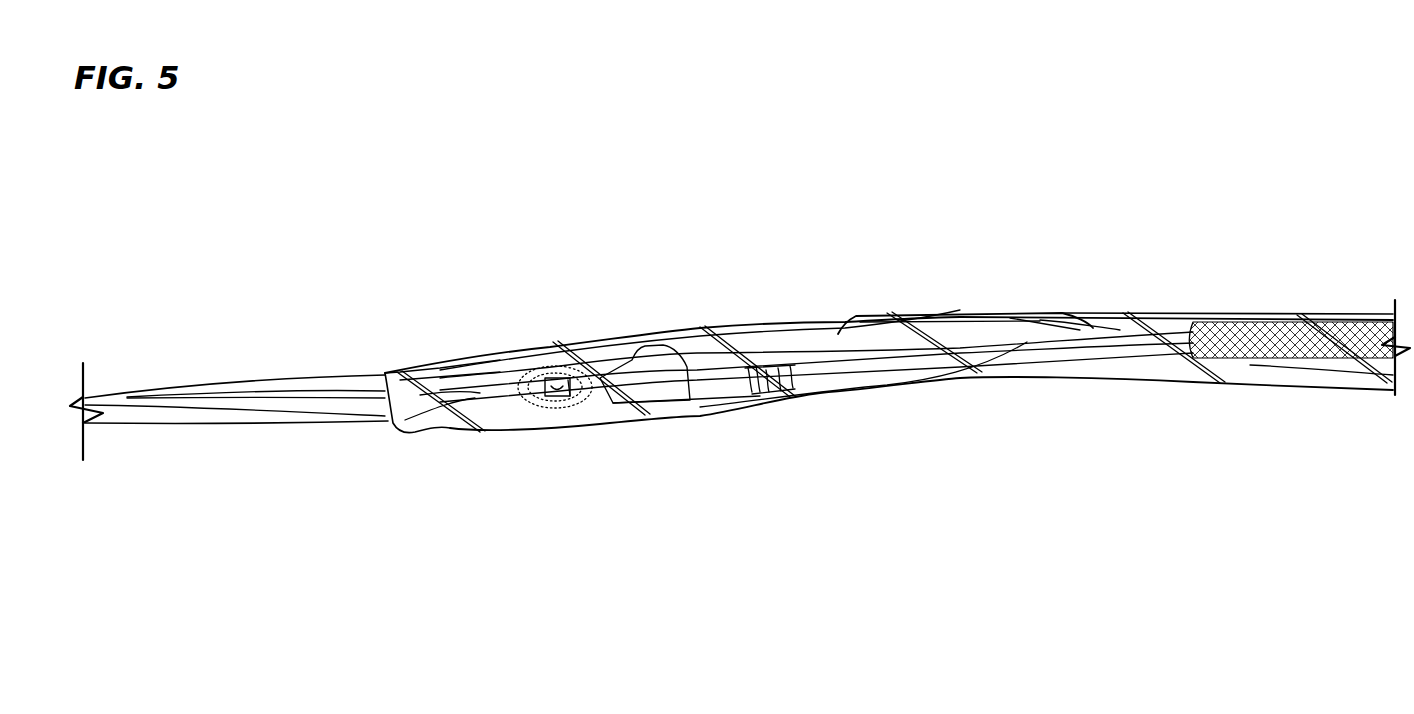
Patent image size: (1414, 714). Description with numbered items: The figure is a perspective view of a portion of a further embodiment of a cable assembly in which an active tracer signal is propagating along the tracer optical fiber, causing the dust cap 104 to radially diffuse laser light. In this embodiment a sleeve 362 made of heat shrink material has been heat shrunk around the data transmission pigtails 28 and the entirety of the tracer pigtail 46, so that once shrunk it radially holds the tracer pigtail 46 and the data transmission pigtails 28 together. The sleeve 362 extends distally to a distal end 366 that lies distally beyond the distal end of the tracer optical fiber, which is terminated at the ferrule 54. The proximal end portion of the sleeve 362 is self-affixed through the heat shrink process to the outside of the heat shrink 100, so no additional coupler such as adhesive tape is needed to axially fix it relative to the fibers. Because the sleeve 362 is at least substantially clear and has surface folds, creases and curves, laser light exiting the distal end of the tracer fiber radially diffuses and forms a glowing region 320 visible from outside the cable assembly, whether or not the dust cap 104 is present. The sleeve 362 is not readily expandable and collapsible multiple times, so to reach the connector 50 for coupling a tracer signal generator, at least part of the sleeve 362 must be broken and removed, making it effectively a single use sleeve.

The data transmission pigtails 28 is at (230, 402).
The distal end 366 is at (384, 373).
The ferrule 54 is at (557, 380).
The sleeve 362 is at (912, 322).
The heat shrink 100 is at (1220, 330).
The glowing region 320 is at (530, 395).
The dust cap 104 is at (568, 396).
The connector 50 is at (652, 394).
The tracer pigtail 46 is at (800, 375).